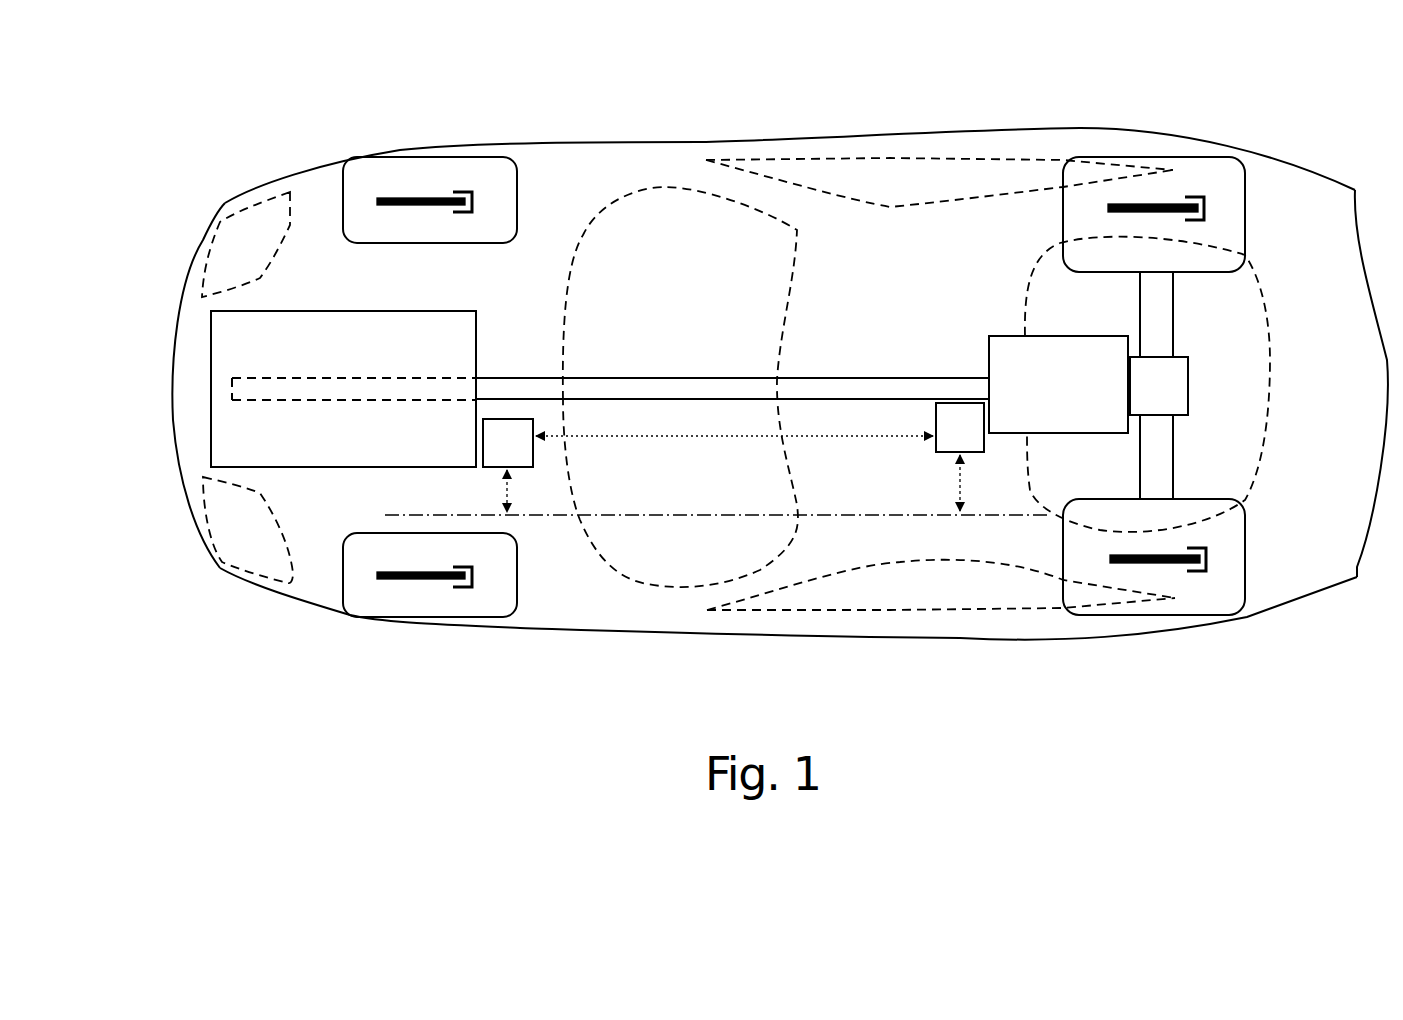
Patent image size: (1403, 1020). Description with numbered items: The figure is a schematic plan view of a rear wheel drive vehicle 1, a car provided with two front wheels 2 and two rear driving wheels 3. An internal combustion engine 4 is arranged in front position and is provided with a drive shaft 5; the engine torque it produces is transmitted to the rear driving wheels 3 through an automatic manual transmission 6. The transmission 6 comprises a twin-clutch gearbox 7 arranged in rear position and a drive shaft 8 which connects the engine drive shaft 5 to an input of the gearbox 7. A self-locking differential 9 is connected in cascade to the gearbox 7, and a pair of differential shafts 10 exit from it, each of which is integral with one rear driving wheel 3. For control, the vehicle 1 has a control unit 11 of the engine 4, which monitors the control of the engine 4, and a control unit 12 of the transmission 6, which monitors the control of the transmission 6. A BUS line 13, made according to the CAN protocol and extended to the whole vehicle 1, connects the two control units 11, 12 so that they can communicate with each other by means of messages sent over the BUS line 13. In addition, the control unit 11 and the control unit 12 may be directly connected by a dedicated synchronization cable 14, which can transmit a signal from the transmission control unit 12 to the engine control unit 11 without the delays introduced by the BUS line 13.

The vehicle 1 is at (1260, 708).
The front wheels 2 is at (366, 172).
The rear driving wheels 3 is at (1233, 172).
The internal combustion engine 4 is at (218, 330).
The drive shaft 5 is at (332, 385).
The automatic manual transmission 6 is at (813, 118).
The twin-clutch gearbox 7 is at (1020, 363).
The drive shaft 8 is at (833, 390).
The self-locking differential 9 is at (1160, 386).
The differential shafts 10 is at (1158, 328).
The control unit of the engine 11 is at (508, 465).
The control unit of the transmission 12 is at (960, 457).
The BUS line 13 is at (560, 538).
The synchronization cable 14 is at (660, 436).